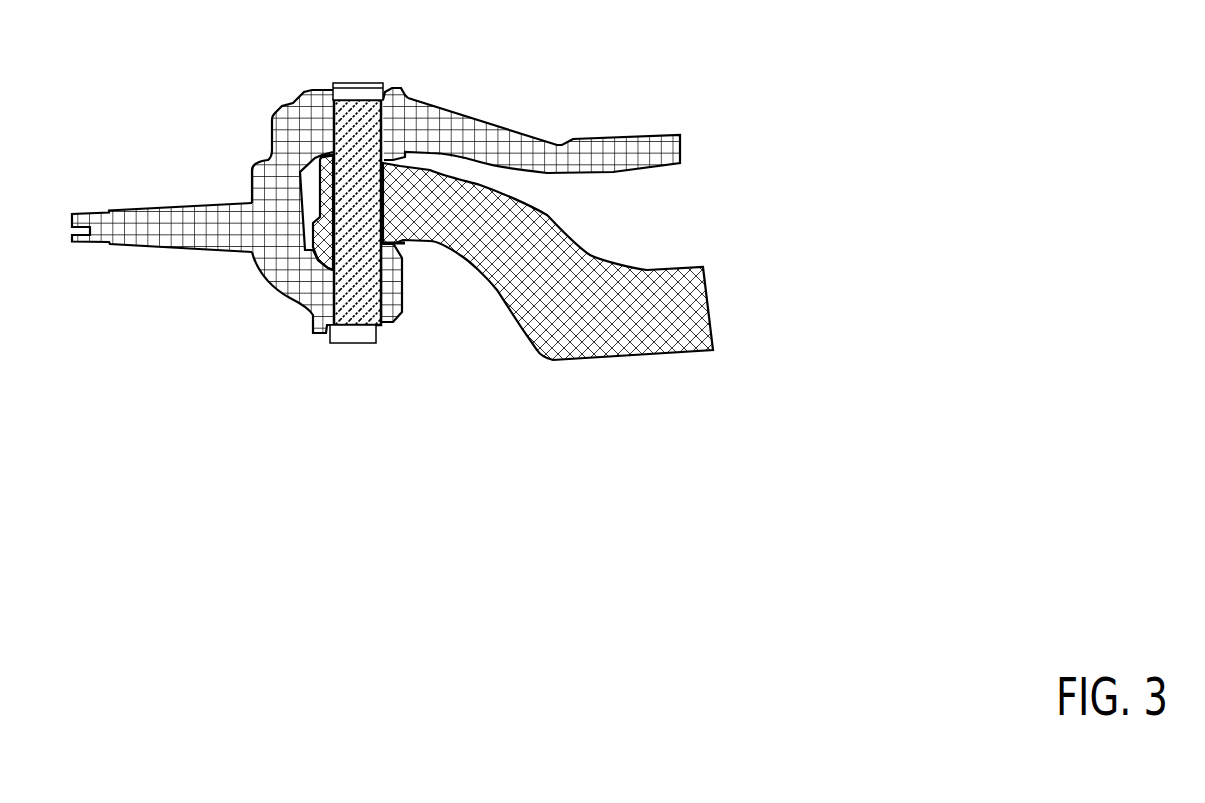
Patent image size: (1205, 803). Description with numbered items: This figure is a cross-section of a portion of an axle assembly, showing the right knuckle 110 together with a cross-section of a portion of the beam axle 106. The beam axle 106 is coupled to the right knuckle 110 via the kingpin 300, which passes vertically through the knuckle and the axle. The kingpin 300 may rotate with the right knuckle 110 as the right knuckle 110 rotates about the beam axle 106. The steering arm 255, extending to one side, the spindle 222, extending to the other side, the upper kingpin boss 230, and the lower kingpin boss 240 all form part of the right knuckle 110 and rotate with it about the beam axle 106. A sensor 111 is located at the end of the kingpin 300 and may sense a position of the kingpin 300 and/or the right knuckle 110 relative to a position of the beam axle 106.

The right knuckle 110 is at (264, 93).
The sensor 111 is at (357, 95).
The upper kingpin boss 230 is at (277, 130).
The spindle 222 is at (142, 216).
The steering arm 255 is at (680, 150).
The beam axle 106 is at (688, 310).
The lower kingpin boss 240 is at (400, 290).
The kingpin 300 is at (362, 312).